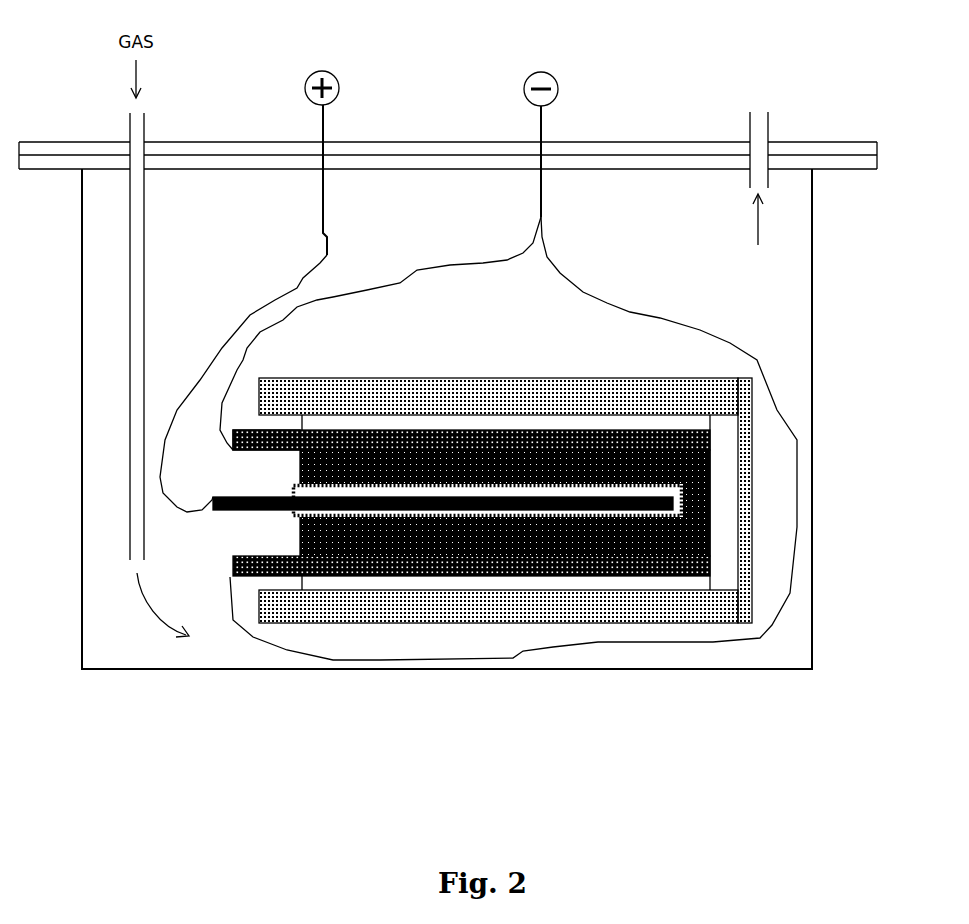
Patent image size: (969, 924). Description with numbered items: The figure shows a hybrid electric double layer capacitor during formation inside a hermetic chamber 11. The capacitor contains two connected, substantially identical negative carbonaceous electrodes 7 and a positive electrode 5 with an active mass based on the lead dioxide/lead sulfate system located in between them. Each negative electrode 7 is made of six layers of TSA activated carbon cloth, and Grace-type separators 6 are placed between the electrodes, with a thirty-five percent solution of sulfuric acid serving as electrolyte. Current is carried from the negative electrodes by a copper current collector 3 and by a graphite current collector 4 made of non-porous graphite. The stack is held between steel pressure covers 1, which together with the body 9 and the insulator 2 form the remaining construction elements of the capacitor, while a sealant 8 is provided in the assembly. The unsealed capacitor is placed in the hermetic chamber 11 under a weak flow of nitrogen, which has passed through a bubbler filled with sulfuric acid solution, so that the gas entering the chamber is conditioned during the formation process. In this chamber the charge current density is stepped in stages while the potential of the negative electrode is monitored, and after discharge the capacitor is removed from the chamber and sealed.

The steel pressure covers 1 is at (322, 392).
The insulator 2 is at (363, 422).
The copper current collector of the negative electrode 3 is at (432, 430).
The graphite current collector of the negative electrode 4 is at (291, 451).
The positive electrode 5 is at (235, 508).
The separator 6 is at (300, 513).
The negative carbonaceous electrode 7 is at (516, 436).
The sealant 8 is at (728, 503).
The body 9 is at (748, 560).
The hermetic chamber 11 is at (812, 327).